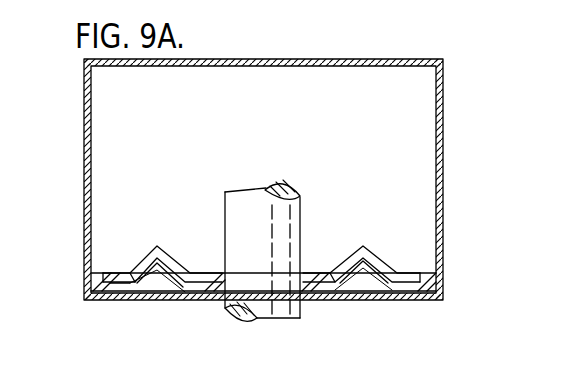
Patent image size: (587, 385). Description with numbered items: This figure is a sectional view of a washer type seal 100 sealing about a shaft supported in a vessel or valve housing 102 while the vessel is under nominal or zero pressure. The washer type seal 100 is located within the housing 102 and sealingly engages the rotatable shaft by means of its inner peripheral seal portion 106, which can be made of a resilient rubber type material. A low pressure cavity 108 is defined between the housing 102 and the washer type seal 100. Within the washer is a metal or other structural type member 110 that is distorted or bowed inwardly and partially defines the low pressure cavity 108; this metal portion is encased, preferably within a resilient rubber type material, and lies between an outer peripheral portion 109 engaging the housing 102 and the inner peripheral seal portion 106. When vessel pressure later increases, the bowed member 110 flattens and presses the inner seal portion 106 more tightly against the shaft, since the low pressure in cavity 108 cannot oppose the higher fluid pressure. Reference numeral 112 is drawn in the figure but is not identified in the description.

The washer type seal 100 is at (394, 229).
The vessel or valve housing 102 is at (445, 248).
The inner peripheral seal portion 106 is at (307, 273).
The low pressure cavity 108 is at (375, 300).
The outer peripheral portion 109 is at (88, 282).
The structural type member 110 is at (143, 260).
The clip foot 112 is at (143, 300).